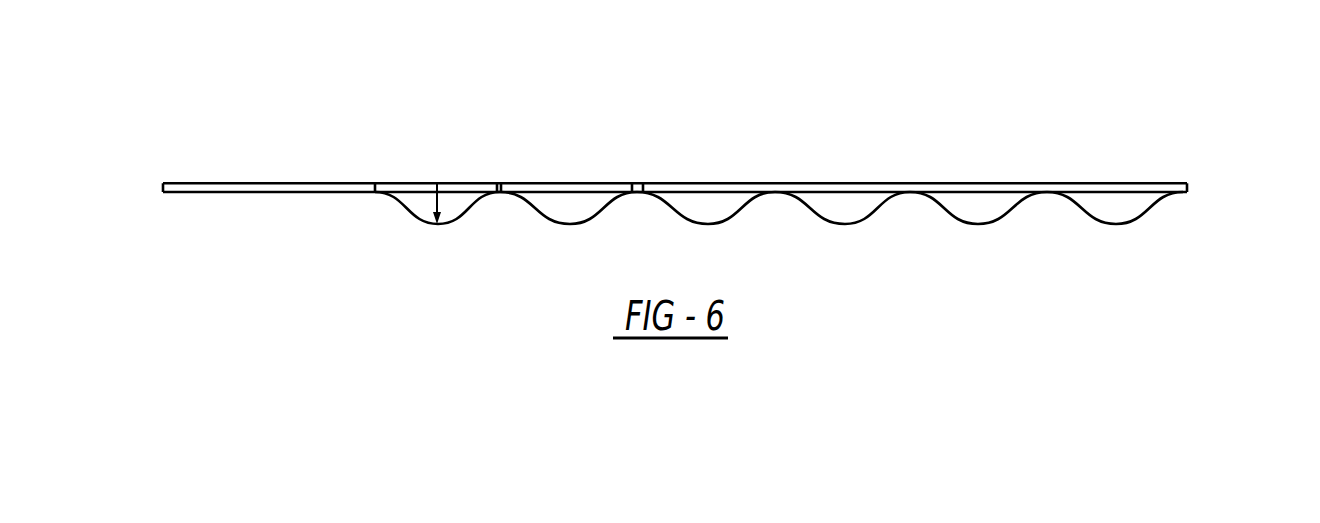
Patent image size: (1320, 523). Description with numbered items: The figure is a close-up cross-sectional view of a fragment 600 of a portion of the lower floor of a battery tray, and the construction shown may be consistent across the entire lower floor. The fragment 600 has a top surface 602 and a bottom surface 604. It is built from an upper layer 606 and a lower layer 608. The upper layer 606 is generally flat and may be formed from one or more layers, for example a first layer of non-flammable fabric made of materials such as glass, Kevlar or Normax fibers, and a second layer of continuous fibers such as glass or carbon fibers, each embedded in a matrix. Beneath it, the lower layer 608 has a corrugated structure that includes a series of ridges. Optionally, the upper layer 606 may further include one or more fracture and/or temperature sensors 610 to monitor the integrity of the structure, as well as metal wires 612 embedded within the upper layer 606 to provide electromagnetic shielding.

The fragment 600 is at (714, 168).
The top surface 602 is at (673, 144).
The bottom surface 604 is at (360, 210).
The upper layer 606 is at (1200, 185).
The lower layer 608 is at (998, 224).
The fracture and/or temperature sensors 610 is at (545, 179).
The metal wires 612 is at (275, 178).